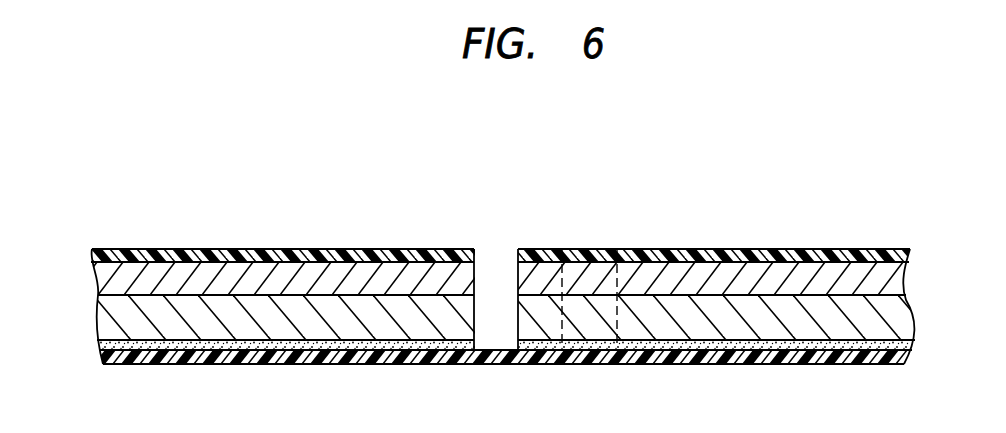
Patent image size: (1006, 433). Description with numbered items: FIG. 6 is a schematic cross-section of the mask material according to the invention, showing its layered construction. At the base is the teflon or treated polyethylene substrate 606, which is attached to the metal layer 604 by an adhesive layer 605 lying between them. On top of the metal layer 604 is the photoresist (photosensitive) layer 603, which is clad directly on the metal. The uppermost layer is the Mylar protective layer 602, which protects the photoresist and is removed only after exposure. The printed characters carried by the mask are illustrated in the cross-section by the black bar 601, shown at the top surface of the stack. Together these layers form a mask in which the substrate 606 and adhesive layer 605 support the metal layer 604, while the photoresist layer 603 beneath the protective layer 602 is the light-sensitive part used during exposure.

The black bar 601 is at (593, 250).
The Mylar protective layer 602 is at (843, 250).
The photoresist layer 603 is at (894, 282).
The metal layer 604 is at (111, 322).
The adhesive layer 605 is at (894, 350).
The substrate 606 is at (139, 357).